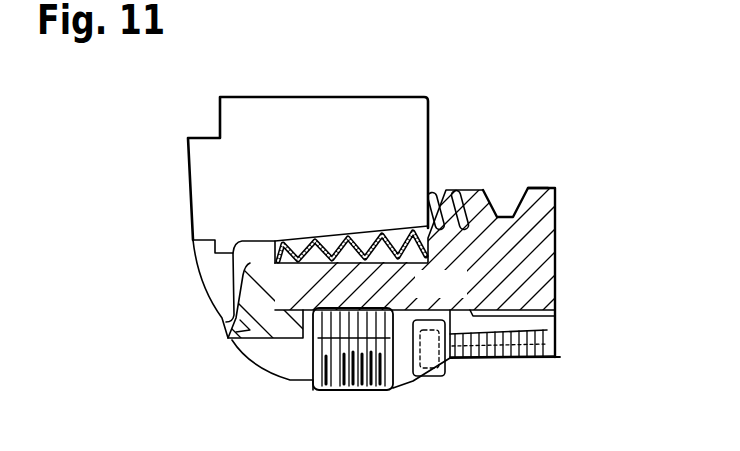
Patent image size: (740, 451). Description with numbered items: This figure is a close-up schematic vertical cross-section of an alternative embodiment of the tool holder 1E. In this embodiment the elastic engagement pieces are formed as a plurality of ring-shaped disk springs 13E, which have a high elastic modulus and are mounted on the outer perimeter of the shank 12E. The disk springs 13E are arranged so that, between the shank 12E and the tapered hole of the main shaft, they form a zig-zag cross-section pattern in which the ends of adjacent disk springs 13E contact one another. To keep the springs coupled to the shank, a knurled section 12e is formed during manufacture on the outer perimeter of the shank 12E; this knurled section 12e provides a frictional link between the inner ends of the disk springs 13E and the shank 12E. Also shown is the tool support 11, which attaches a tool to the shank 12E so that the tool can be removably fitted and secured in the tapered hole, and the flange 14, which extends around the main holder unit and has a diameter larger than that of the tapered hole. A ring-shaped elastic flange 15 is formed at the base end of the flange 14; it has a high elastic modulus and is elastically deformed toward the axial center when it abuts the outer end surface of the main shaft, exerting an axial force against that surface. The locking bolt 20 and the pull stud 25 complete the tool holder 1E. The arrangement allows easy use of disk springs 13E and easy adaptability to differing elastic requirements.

The tool holder 1E is at (577, 178).
The tool support 11 is at (540, 285).
The knurled section 12e is at (401, 283).
The shank 12E is at (346, 390).
The ring-shaped disk springs 13E is at (302, 242).
The flange 14 is at (546, 189).
The elastic flange 15 is at (433, 188).
The locking bolt 20 is at (510, 358).
The pull stud 25 is at (262, 325).